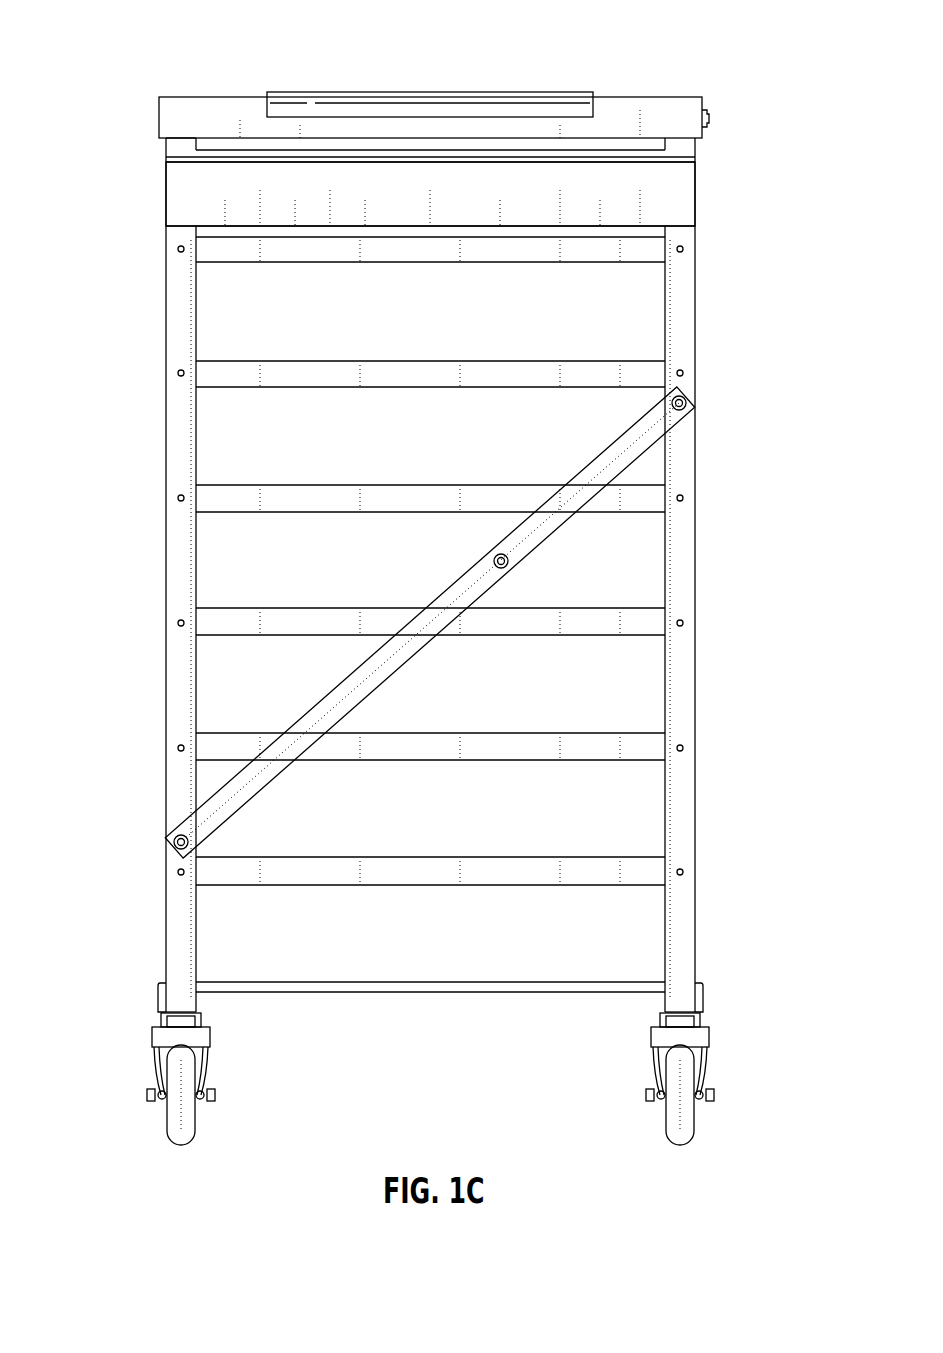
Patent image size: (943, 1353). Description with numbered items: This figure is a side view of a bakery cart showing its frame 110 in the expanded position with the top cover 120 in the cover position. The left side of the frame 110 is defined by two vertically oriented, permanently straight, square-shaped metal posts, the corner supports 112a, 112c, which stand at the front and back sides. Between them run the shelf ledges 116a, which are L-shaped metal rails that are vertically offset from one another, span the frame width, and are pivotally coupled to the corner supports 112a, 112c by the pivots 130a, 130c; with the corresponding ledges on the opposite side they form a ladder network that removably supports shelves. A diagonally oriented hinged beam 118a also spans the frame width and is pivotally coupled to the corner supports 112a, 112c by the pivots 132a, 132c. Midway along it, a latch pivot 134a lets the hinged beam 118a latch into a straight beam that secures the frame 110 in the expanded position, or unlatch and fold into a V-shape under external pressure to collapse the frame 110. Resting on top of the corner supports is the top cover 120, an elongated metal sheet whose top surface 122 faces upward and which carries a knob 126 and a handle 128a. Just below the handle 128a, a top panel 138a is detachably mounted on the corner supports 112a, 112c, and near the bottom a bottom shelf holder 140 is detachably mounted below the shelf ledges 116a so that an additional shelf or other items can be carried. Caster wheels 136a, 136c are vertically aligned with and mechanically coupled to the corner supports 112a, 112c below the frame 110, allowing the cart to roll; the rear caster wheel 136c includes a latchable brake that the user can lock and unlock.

The frame 110 is at (166, 318).
The corner support 112a is at (697, 295).
The corner support 112c is at (166, 448).
The shelf ledge 116a is at (417, 262).
The hinged beam 118a is at (436, 609).
The top cover 120 is at (166, 97).
The top surface 122 is at (232, 97).
The knob 126 is at (708, 116).
The handle 128a is at (445, 92).
The pivot 130a is at (684, 249).
The pivot 130c is at (178, 249).
The pivot 132a is at (688, 400).
The pivot 132c is at (174, 838).
The latch pivot 134a is at (508, 566).
The caster wheel 136a is at (695, 1120).
The caster wheel 136c is at (167, 1122).
The top panel 138a is at (698, 188).
The bottom shelf holder 140 is at (413, 993).